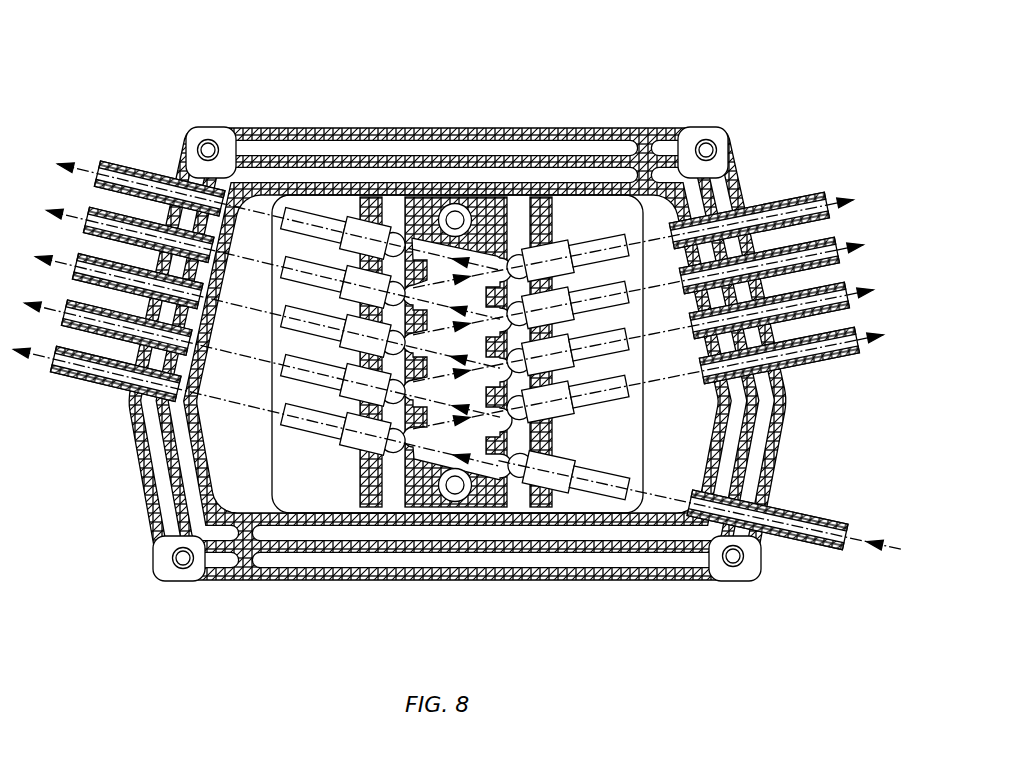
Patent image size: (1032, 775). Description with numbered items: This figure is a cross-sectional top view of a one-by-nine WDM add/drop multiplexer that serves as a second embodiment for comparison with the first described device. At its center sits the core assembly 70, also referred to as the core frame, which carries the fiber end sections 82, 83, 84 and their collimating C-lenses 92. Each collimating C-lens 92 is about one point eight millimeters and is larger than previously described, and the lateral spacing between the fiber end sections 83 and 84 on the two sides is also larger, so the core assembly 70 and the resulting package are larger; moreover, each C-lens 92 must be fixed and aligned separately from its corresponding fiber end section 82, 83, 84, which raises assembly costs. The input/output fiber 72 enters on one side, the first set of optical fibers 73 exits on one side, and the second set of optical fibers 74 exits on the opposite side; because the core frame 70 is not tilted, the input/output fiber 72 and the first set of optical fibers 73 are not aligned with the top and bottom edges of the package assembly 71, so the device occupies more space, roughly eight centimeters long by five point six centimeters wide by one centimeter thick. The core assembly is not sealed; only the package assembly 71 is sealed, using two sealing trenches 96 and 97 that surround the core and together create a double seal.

The core assembly 70 is at (330, 477).
The package assembly 71 is at (327, 93).
The input/output fiber 72 is at (797, 530).
The first set of optical fibers 73 is at (54, 266).
The second set of optical fibers 74 is at (837, 203).
The fiber end section 82 is at (607, 480).
The fiber end section 83 is at (302, 217).
The fiber end section 84 is at (613, 255).
The collimating C-lens 92 is at (397, 245).
The sealing trench 96 is at (587, 178).
The sealing trench 97 is at (573, 150).